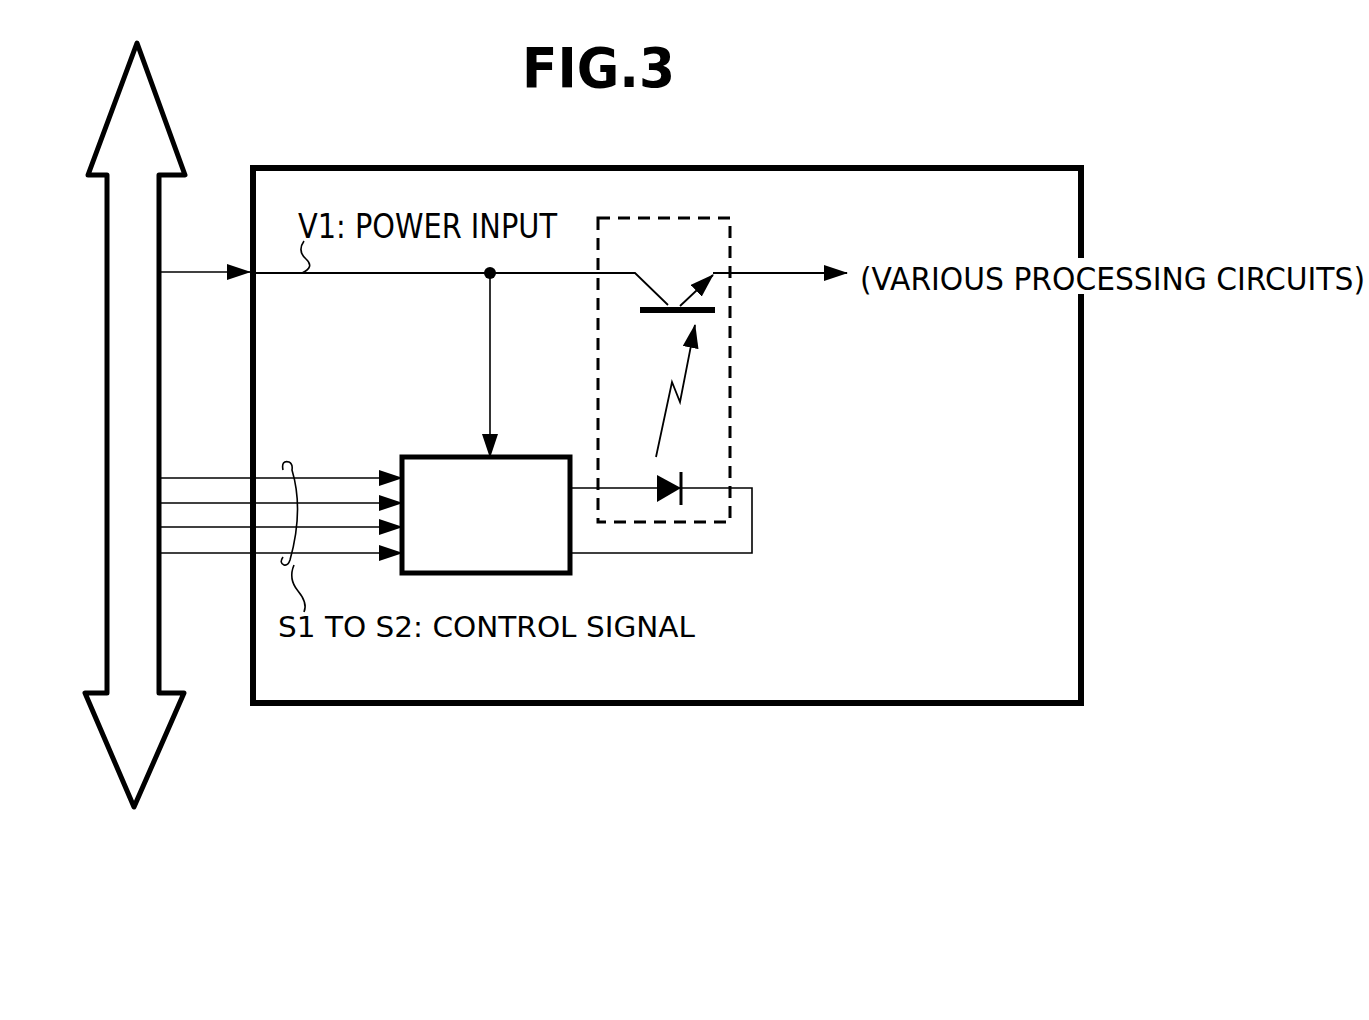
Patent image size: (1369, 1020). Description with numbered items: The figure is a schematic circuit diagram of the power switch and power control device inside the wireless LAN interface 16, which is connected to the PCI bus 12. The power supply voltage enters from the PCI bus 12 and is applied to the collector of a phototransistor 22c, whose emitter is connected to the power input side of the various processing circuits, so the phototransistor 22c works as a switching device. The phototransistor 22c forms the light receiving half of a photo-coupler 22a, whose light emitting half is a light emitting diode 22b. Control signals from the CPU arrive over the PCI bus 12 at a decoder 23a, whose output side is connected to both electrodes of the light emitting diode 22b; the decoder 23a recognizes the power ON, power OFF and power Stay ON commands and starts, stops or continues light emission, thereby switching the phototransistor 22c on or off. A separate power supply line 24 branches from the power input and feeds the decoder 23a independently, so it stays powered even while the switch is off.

The peripheral component interconnect (PCI) bus 12 is at (107, 397).
The wireless LAN interface 16 is at (878, 707).
The photo-coupler 22a is at (708, 410).
The light emitting diode 22b is at (672, 503).
The phototransistor 22c is at (676, 290).
The decoder 23a is at (535, 457).
The power supply line 24 is at (488, 365).